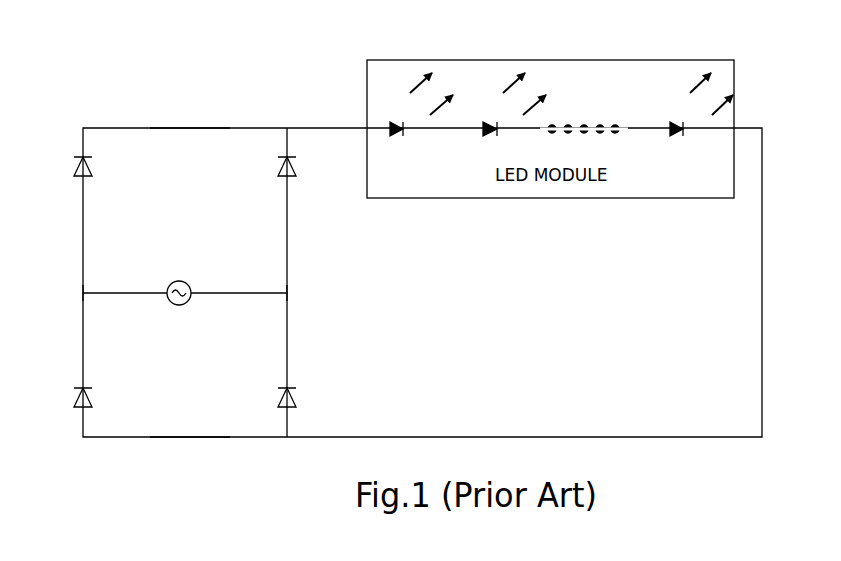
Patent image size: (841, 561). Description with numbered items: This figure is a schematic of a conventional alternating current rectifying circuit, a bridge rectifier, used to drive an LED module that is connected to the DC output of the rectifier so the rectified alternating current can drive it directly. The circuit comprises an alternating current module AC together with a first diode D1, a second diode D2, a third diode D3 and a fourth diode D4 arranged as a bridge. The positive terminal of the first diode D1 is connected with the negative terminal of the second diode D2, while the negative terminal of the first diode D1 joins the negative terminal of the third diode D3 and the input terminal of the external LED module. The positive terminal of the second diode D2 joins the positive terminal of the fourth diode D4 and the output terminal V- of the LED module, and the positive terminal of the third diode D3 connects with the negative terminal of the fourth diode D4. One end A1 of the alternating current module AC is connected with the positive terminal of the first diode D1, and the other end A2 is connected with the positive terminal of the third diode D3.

The first diode D1 is at (103, 168).
The second diode D2 is at (103, 399).
The third diode D3 is at (306, 168).
The fourth diode D4 is at (306, 399).
The alternating current module AC is at (185, 310).
The one end of the alternating current module A1 is at (61, 298).
The other end of the alternating current module A2 is at (305, 298).
The output terminal of the external LED module V- is at (190, 456).